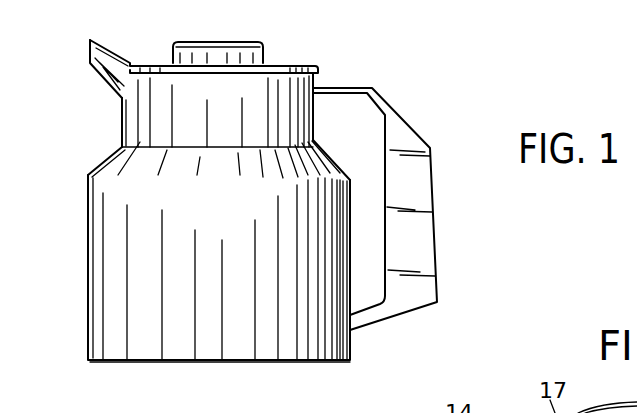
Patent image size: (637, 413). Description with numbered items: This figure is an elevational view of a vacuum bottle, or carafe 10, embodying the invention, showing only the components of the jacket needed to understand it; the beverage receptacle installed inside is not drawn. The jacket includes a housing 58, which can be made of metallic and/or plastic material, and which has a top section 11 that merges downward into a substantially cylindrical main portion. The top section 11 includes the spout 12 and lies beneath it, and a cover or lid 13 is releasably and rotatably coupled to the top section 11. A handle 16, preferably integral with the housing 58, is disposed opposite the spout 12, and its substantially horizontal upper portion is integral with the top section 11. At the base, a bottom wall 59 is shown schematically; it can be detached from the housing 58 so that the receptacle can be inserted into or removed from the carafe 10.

The vessel 10 is at (83, 220).
The top section 11 is at (121, 116).
The spout 12 is at (88, 55).
The lid 13 is at (273, 48).
The handle 16 is at (440, 205).
The housing 58 is at (87, 302).
The bottom wall 59 is at (168, 363).